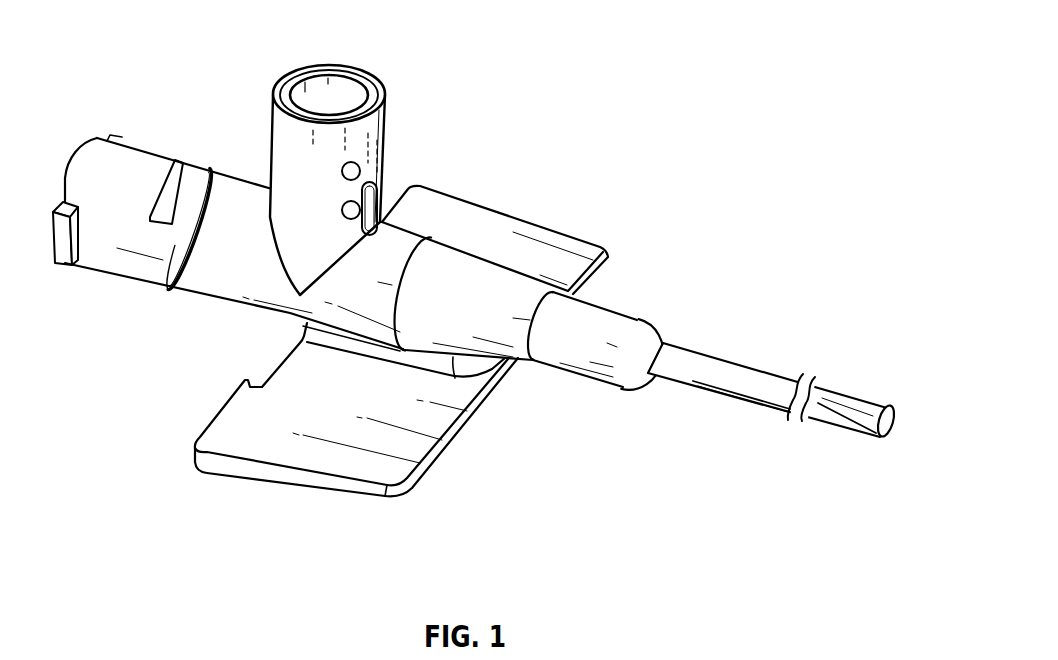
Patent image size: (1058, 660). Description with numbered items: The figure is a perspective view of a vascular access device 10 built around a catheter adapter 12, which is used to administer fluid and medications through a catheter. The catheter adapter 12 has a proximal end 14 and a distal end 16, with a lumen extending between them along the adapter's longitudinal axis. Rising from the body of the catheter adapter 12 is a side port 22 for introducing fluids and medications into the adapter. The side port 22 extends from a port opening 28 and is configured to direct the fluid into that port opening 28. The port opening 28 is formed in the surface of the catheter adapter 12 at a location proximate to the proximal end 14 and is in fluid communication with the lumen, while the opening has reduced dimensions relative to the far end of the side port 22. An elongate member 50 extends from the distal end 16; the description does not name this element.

The vascular access device 10 is at (658, 48).
The catheter adapter 12 is at (418, 162).
The proximal end 14 is at (98, 147).
The distal end 16 is at (642, 328).
The side port 22 is at (271, 107).
The port opening 28 is at (270, 189).
The elongate shaft 50 is at (740, 373).